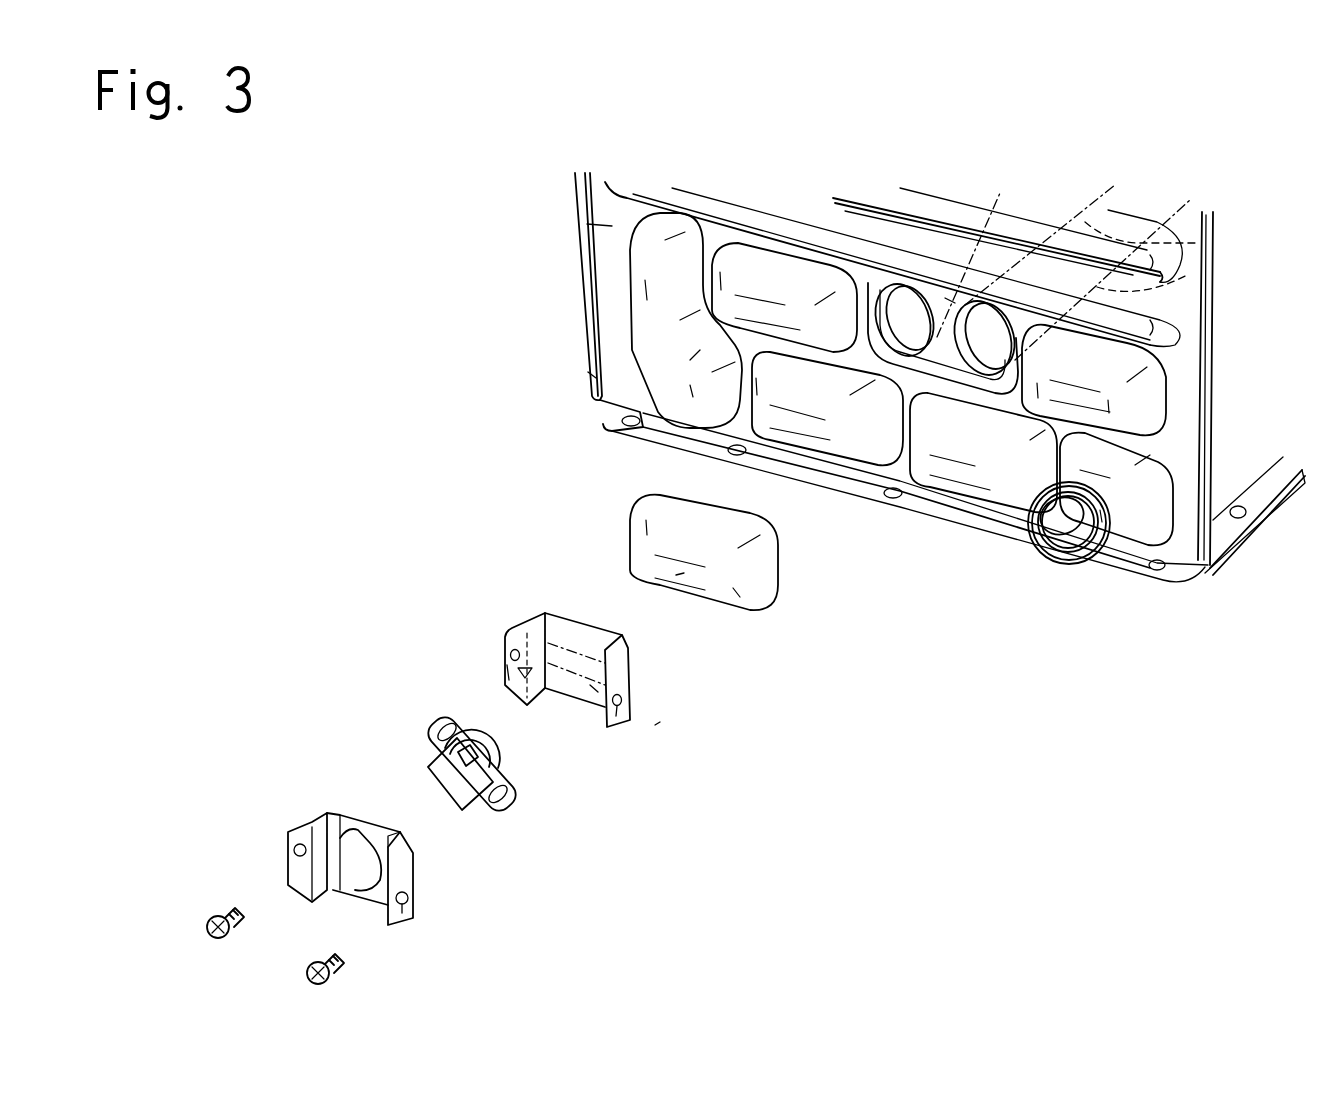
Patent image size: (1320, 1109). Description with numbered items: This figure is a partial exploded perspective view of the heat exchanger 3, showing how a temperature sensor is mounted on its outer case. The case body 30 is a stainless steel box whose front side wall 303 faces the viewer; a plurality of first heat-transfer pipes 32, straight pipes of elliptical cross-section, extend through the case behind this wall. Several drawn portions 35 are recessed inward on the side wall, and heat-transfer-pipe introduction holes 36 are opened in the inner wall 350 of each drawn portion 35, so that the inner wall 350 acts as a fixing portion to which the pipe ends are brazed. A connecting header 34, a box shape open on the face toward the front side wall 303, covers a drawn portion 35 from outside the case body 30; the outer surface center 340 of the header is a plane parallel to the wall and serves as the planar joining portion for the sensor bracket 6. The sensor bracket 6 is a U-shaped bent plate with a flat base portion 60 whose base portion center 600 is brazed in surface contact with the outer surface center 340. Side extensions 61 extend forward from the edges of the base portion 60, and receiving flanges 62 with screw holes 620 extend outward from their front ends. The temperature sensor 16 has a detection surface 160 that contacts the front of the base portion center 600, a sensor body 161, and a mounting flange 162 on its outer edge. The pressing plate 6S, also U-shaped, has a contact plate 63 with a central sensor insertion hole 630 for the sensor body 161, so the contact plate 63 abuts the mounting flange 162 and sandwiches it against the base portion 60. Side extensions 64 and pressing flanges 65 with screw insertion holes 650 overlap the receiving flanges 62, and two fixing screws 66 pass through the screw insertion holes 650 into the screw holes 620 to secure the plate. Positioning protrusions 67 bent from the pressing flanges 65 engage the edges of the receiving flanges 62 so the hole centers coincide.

The heat exchanger 3 is at (520, 266).
The front side wall 303 is at (612, 226).
The case body 30 is at (590, 378).
The first heat-transfer pipe 32 is at (1197, 243).
The connecting header 34 is at (758, 258).
The drawn portion 35 is at (848, 268).
The heat-transfer-pipe introduction hole 36 is at (905, 298).
The inner wall 350 is at (950, 300).
The outer surface center 340 is at (680, 573).
The sensor bracket 6 is at (655, 725).
The base portion 60 is at (570, 628).
The base portion center 600 is at (595, 690).
The side extension 61 is at (540, 617).
The receiving flange 62 is at (508, 673).
The screw hole 620 is at (512, 650).
The temperature sensor 16 is at (476, 765).
The detection surface 160 is at (510, 752).
The sensor body 161 is at (472, 738).
The mounting flange 162 is at (432, 728).
The pressing plate 6S is at (367, 862).
The contact plate 63 is at (342, 822).
The side extension 64 is at (315, 815).
The pressing flange 65 is at (300, 873).
The screw insertion hole 650 is at (295, 845).
The sensor insertion hole 630 is at (355, 895).
The positioning protrusion 67 is at (405, 845).
The fixing screw 66 is at (207, 927).